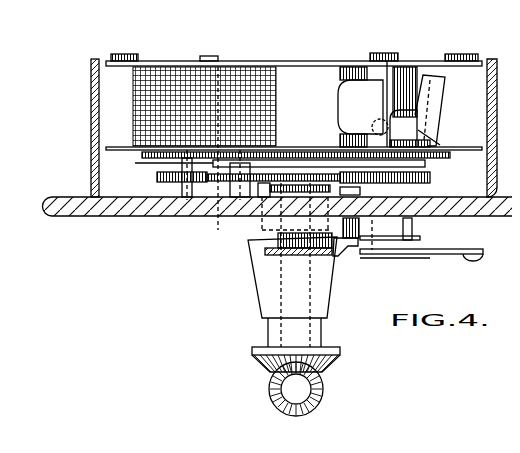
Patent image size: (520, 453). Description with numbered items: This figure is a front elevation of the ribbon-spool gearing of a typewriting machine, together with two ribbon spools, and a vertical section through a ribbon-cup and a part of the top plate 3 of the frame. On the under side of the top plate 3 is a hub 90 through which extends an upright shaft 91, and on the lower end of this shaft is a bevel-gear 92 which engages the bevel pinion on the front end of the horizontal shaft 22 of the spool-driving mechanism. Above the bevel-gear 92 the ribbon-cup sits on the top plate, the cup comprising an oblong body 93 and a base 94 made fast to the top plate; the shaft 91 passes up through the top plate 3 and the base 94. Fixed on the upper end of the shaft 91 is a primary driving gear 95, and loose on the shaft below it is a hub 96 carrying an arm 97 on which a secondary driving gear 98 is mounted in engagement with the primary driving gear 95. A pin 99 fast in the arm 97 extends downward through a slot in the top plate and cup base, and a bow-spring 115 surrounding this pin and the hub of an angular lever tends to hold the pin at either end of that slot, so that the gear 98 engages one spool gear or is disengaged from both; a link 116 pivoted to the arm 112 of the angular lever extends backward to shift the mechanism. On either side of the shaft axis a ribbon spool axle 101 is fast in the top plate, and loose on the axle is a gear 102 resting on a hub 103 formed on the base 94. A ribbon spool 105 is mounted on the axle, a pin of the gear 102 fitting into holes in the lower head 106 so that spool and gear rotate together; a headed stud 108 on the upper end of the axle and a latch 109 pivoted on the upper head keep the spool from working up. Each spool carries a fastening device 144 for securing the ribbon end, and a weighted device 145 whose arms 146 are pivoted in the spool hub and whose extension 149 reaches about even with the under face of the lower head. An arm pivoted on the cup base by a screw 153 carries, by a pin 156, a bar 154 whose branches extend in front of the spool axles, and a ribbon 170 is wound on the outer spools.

The top plate 3 is at (80, 218).
The shaft 22 is at (298, 395).
The hub 90 is at (262, 278).
The upright shaft 91 is at (281, 302).
The bevel-gear 92 is at (261, 359).
The oblong body 93 is at (91, 149).
The base 94 is at (468, 197).
The primary driving gear 95 is at (290, 172).
The hub 96 is at (265, 190).
The arm 97 is at (313, 183).
The secondary driving gear 98 is at (425, 177).
The pin 99 is at (352, 256).
The ribbon spool axle 101 is at (200, 212).
The gear 102 is at (157, 178).
The hub 103 is at (182, 185).
The ribbon spool 105 is at (165, 61).
The lower head 106 is at (116, 148).
The headed stud 108 is at (212, 60).
The latch 109 is at (145, 54).
The arm 112 is at (436, 251).
The bow-spring 115 is at (408, 241).
The link 116 is at (480, 262).
The fastening device 144 is at (339, 88).
The device 145 is at (441, 93).
The arm 146 is at (410, 128).
The extension 149 is at (430, 157).
The screw 153 is at (242, 175).
The bar 154 is at (277, 155).
The pin 156 is at (339, 131).
The ribbon 170 is at (136, 97).